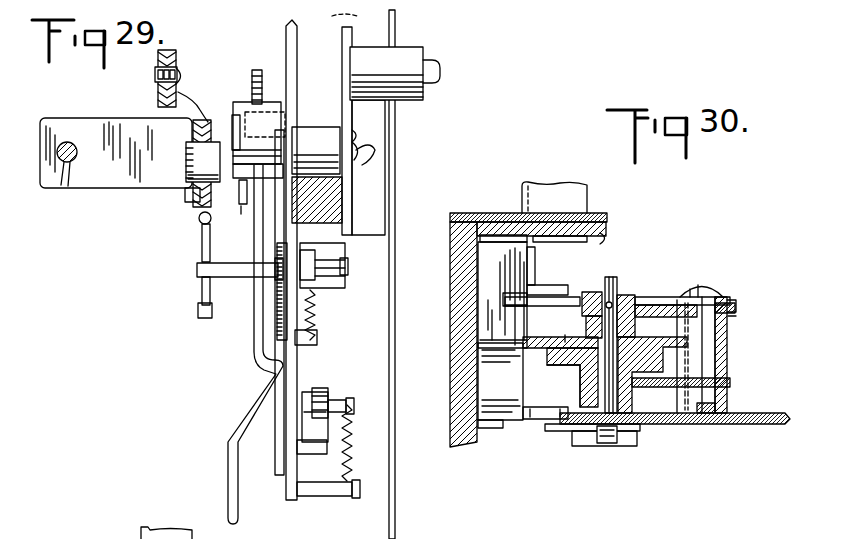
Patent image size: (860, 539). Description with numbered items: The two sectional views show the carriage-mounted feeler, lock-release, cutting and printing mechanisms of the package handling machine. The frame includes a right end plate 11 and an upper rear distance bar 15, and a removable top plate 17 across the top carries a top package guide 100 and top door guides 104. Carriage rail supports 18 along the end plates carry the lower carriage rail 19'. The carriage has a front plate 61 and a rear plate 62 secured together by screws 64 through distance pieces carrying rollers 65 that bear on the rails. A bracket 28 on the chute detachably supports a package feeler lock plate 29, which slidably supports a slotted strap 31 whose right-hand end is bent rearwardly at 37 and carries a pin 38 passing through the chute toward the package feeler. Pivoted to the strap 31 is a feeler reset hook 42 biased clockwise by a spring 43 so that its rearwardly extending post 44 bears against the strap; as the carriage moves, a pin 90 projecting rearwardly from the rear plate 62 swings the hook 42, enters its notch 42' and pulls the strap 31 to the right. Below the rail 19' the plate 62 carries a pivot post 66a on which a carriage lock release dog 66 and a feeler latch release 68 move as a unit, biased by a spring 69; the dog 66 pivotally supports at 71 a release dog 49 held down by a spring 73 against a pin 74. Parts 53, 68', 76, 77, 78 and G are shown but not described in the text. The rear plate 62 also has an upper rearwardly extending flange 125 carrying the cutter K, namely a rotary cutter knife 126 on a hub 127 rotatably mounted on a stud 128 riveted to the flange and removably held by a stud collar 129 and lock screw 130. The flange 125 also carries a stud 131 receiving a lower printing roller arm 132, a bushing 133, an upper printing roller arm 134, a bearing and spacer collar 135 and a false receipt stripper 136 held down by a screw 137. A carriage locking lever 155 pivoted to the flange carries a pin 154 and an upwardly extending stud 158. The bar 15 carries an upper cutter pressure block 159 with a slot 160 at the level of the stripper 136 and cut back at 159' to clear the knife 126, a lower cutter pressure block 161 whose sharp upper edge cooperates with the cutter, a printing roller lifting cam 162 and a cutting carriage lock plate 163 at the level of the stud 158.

In FIG. 29, the right end plate 11 is at (383, 247).
In FIG. 30, the upper rear distance bar 15 is at (452, 367).
In FIG. 30, the top plate 17 is at (607, 240).
In FIG. 29, the carriage rail support 18 is at (380, 187).
In FIG. 29, the lower carriage rail 19' is at (336, 200).
In FIG. 29, the bracket 28 is at (158, 97).
In FIG. 29, the package feeler lock plate 29 is at (173, 52).
In FIG. 29, the slotted strap 31 is at (187, 178).
In FIG. 29, the bent rearward end of strap 37 is at (107, 170).
In FIG. 29, the pin 38 is at (68, 180).
In FIG. 29, the feeler reset hook 42 is at (180, 243).
In FIG. 29, the notch 42' is at (179, 297).
In FIG. 29, the spring 43 is at (199, 222).
In FIG. 29, the rearwardly extending post 44 is at (195, 207).
In FIG. 29, the release dog 49 is at (317, 393).
In FIG. 29, the rack 53 is at (312, 290).
In FIG. 29, the front plate 61 is at (347, 123).
In FIG. 29, the rear plate 62 is at (289, 68).
In FIG. 29, the screws 64 is at (364, 160).
In FIG. 29, the rollers 65 is at (310, 132).
In FIG. 29, the carriage lock release dog 66 is at (297, 367).
In FIG. 29, the pivot post 66a is at (348, 268).
In FIG. 29, the feeler latch release 68 is at (249, 344).
In FIG. 29, the stem 68' is at (255, 68).
In FIG. 29, the spring 69 is at (316, 312).
In FIG. 29, the pivot 71 is at (303, 417).
In FIG. 29, the spring 73 is at (350, 455).
In FIG. 29, the pin 74 is at (310, 460).
In FIG. 29, the pin 76 is at (243, 200).
In FIG. 29, the block 77 is at (272, 107).
In FIG. 29, the pin 78 is at (232, 180).
In FIG. 29, the pin 90 is at (197, 270).
In FIG. 29, the shaft G is at (443, 78).
In FIG. 30, the top package guide 100 is at (543, 190).
In FIG. 30, the top door guides 104 is at (462, 214).
In FIG. 30, the flange 125 is at (770, 425).
In FIG. 30, the rotary cutter knife 126 is at (543, 348).
In FIG. 30, the hub 127 is at (580, 368).
In FIG. 30, the stud 128 is at (645, 297).
In FIG. 30, the stud collar 129 is at (622, 297).
In FIG. 30, the lock screw 130 is at (609, 290).
In FIG. 30, the printing roller arm supporting stud 131 is at (720, 402).
In FIG. 30, the lower printing roller arm 132 is at (730, 377).
In FIG. 30, the bushing 133 is at (727, 340).
In FIG. 30, the upper printing roller arm 134 is at (733, 307).
In FIG. 30, the bearing and spacer collar 135 is at (732, 310).
In FIG. 30, the false receipt stripper 136 is at (547, 297).
In FIG. 30, the screw 137 is at (692, 284).
In FIG. 30, the pin 154 is at (600, 437).
In FIG. 30, the carriage locking lever 155 is at (633, 447).
In FIG. 30, the stud 158 is at (550, 408).
In FIG. 30, the upper cutter pressure block 159 is at (473, 291).
In FIG. 30, the cut back 159' is at (473, 326).
In FIG. 30, the slot 160 is at (497, 310).
In FIG. 30, the lower cutter pressure block 161 is at (500, 426).
In FIG. 30, the printing roller lifting cam 162 is at (537, 285).
In FIG. 30, the cutting carriage lock plate 163 is at (533, 412).
In FIG. 30, the cutter K is at (568, 336).